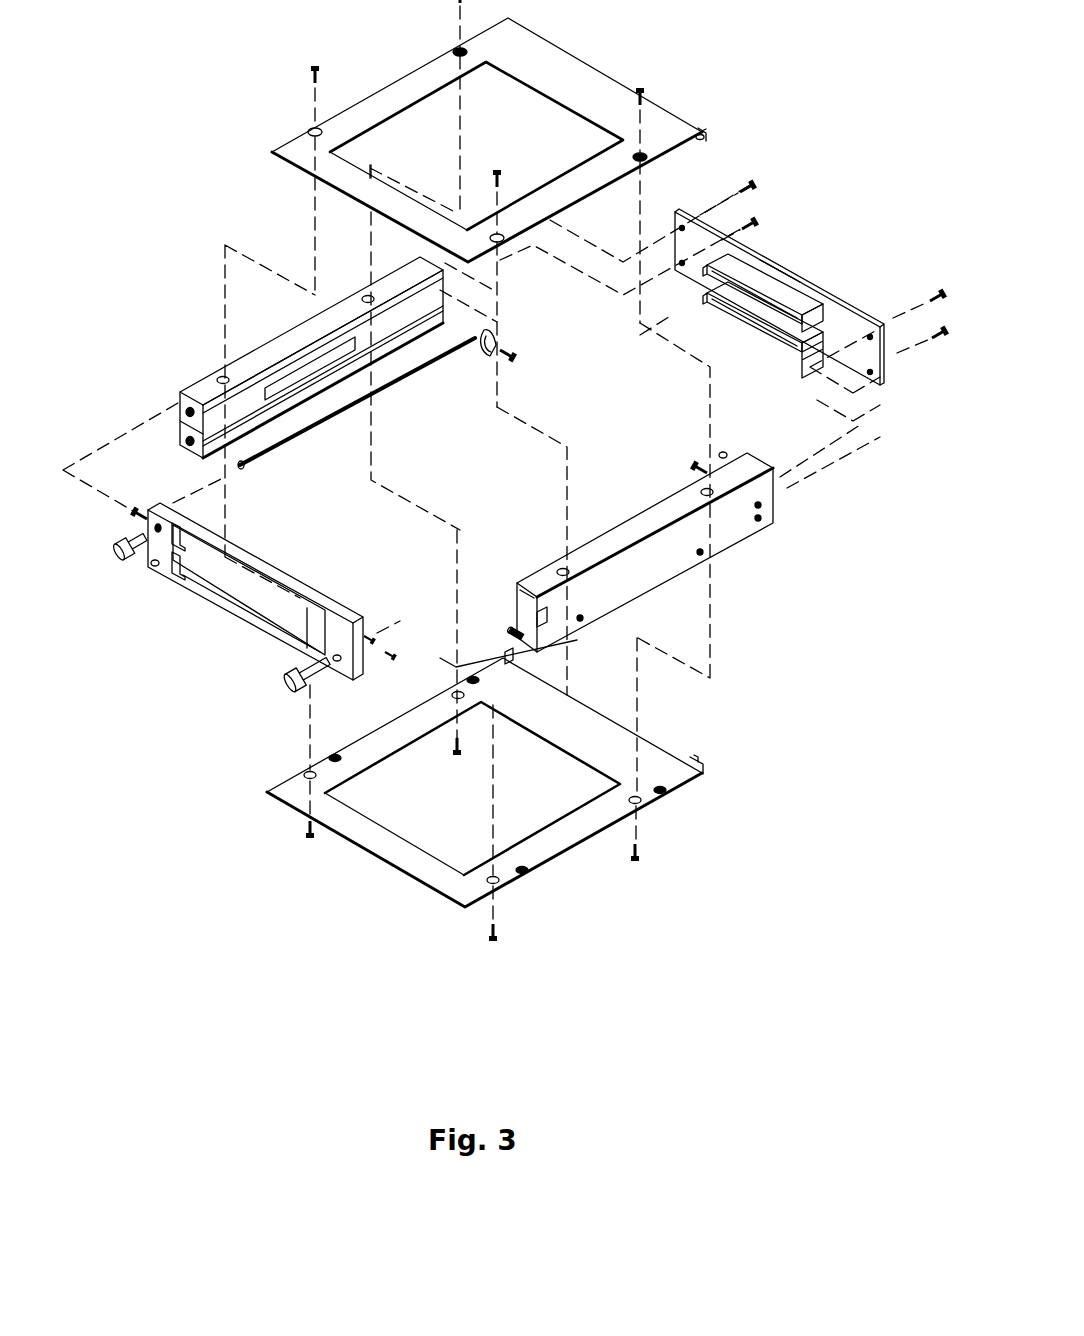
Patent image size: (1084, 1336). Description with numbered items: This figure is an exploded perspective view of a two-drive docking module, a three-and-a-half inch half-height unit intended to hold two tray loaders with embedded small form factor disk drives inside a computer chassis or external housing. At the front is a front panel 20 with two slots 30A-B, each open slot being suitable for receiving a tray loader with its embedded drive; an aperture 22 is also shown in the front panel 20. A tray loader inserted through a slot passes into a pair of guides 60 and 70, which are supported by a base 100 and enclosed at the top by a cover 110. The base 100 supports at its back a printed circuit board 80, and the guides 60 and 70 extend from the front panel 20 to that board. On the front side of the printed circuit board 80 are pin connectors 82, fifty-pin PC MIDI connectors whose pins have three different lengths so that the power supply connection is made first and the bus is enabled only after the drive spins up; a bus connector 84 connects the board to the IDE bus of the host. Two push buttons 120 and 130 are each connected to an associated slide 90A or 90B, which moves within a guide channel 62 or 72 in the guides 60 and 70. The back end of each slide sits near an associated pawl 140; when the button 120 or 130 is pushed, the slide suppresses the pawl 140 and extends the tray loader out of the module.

The cover 110 is at (583, 76).
The base 100 is at (547, 848).
The guide 70 is at (283, 364).
The guide channel 72 is at (180, 430).
The slide 90A is at (263, 458).
The pawl 140 is at (494, 333).
The printed circuit board 80 is at (812, 282).
The pin connector 82 is at (712, 268).
The bus connector 84 is at (782, 270).
The guide 60 is at (631, 558).
The guide channel 62 is at (512, 620).
The slide 90B is at (510, 633).
The front panel 20 is at (223, 594).
The front panel aperture 22 is at (153, 568).
The slots 30A-B is at (185, 550).
The push button 130 is at (117, 556).
The push button 120 is at (290, 687).